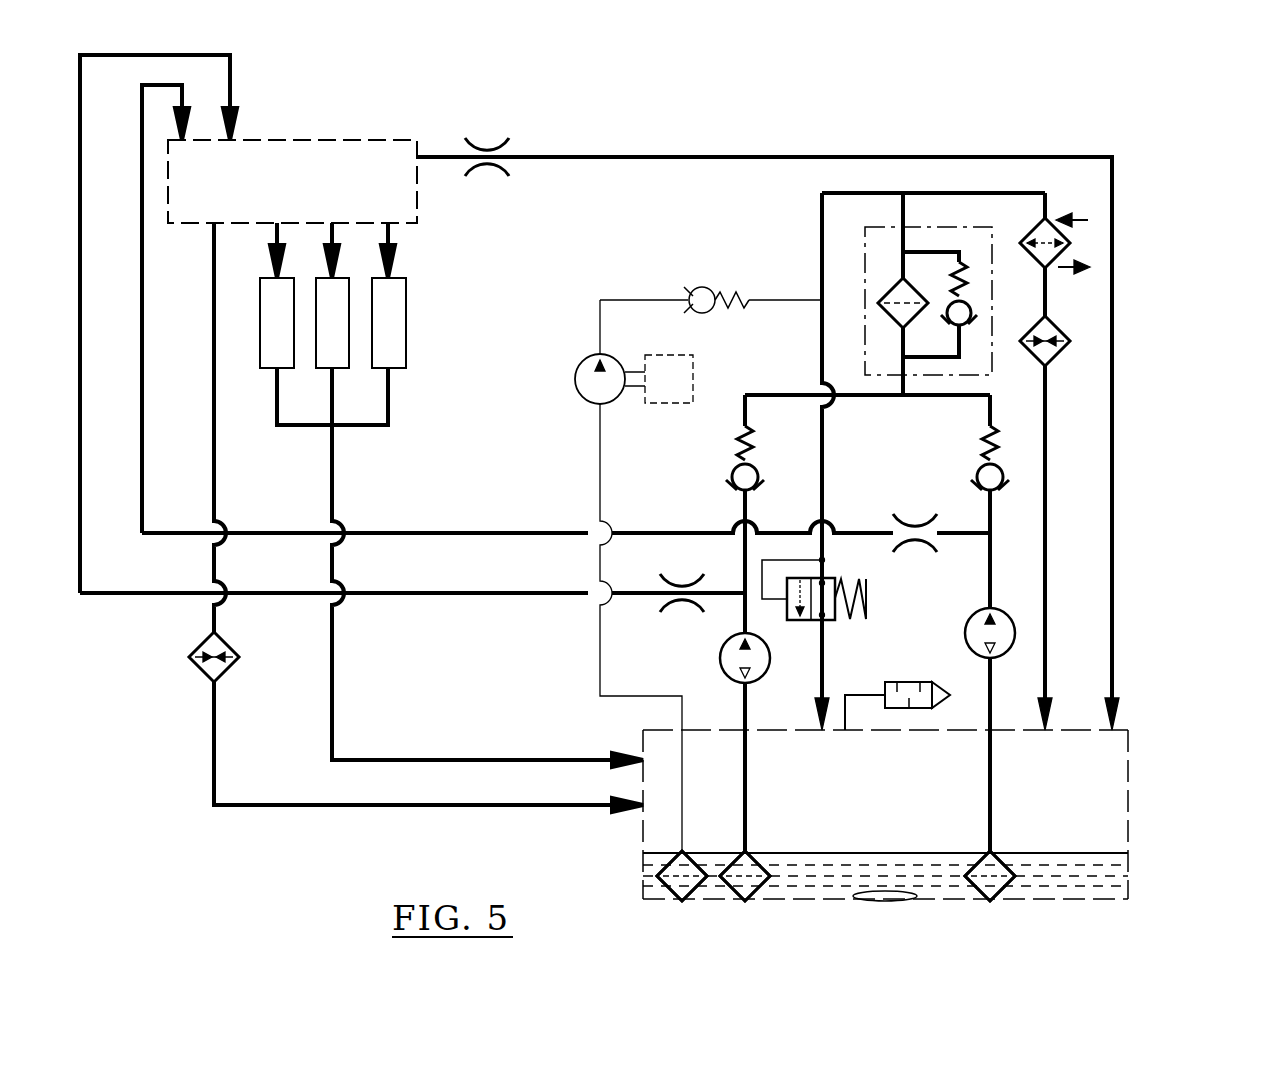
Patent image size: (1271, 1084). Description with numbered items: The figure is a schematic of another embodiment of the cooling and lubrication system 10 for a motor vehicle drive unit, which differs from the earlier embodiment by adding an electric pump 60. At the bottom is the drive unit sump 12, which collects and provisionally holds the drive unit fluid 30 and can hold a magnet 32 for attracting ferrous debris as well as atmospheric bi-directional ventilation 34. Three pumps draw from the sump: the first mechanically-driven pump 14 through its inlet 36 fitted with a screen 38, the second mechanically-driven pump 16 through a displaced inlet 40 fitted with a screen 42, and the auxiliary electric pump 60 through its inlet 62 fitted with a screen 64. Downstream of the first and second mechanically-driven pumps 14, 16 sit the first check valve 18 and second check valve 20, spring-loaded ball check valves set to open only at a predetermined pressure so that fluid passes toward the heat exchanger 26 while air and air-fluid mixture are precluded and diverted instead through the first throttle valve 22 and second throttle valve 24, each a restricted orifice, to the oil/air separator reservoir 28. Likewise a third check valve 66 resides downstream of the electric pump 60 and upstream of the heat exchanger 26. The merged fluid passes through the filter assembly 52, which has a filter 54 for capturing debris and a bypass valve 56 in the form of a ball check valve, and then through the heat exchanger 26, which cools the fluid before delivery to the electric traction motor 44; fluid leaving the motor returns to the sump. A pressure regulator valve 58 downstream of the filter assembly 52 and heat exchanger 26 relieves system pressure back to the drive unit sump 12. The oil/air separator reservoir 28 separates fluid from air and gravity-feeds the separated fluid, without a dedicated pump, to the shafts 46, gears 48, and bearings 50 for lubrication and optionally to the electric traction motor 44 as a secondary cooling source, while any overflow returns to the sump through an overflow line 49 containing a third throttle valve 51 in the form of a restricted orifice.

The cooling and lubrication system 10 is at (1092, 86).
The drive unit sump 12 is at (1130, 812).
The first mechanically-driven pump 14 is at (964, 630).
The second mechanically-driven pump 16 is at (719, 666).
The first check valve 18 is at (1002, 472).
The second check valve 20 is at (730, 472).
The first throttle valve 22 is at (915, 527).
The second throttle valve 24 is at (680, 588).
The heat exchanger 26 is at (1071, 243).
The oil/air separator reservoir 28 is at (350, 140).
The drive unit fluid 30 is at (870, 866).
The magnet 32 is at (888, 902).
The atmospheric bi-directional ventilation 34 is at (900, 681).
The inlet 36 is at (989, 901).
The screen 38 is at (982, 860).
The inlet 40 is at (745, 901).
The screen 42 is at (758, 860).
The electric traction motor 44 is at (241, 657).
The shafts 46 is at (260, 326).
The gears 48 is at (326, 370).
The overflow line 49 is at (563, 156).
The bearings 50 is at (406, 325).
The third throttle valve 51 is at (487, 150).
The filter assembly 52 is at (862, 278).
The filter 54 is at (886, 320).
The bypass valve 56 is at (975, 314).
The pressure regulator valve 58 is at (808, 622).
The electric pump 60 is at (575, 372).
The inlet 62 is at (681, 901).
The screen 64 is at (666, 862).
The third check valve 66 is at (702, 286).